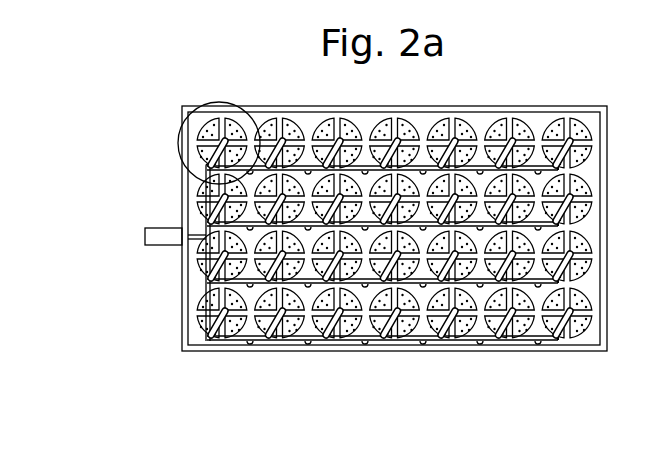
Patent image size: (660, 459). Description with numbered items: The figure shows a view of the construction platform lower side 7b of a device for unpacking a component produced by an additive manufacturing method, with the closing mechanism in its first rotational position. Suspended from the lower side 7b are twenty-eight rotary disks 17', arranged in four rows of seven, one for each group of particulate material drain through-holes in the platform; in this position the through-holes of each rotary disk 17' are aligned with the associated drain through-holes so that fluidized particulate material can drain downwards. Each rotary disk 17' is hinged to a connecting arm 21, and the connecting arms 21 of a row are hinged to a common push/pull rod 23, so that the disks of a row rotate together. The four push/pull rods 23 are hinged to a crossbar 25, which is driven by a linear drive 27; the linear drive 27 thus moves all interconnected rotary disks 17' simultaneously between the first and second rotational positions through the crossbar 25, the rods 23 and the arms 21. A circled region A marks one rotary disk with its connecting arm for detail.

The construction platform lower side 7b is at (590, 285).
The rotary disk 17' is at (394, 264).
The connecting arm 21 is at (385, 338).
The push/pull rod 23 is at (247, 341).
The crossbar 25 is at (206, 291).
The linear drive 27 is at (163, 237).
The detail region A is at (219, 128).